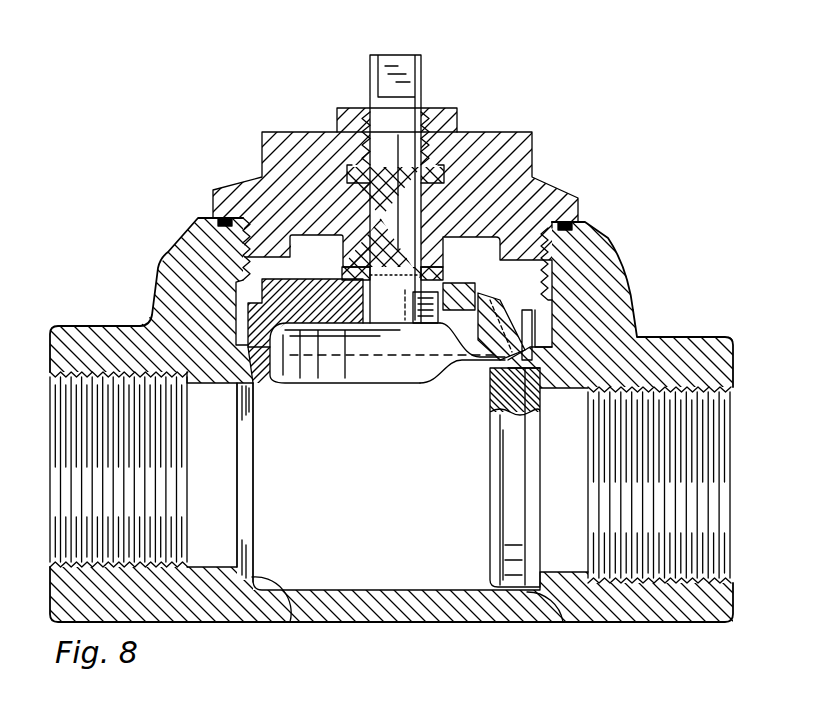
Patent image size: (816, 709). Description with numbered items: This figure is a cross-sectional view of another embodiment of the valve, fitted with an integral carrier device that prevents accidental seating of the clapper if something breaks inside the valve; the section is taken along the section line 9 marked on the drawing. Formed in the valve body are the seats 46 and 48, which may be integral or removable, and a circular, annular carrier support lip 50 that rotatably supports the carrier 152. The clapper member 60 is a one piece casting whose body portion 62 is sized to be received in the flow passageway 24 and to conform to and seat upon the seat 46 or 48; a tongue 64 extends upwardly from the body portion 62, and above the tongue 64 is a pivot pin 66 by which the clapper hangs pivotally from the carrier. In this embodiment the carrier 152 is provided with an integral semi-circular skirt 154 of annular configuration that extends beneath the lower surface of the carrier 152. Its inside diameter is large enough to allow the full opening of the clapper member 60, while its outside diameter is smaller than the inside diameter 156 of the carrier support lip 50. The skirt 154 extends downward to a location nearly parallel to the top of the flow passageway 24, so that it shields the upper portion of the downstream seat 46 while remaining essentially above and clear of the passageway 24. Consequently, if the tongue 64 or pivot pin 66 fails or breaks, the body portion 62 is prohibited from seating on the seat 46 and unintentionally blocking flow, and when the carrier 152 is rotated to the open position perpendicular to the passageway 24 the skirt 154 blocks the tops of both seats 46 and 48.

The section line 9- 9 is at (427, 661).
The passageway 24 is at (715, 506).
The seat 46 is at (290, 622).
The seat 48 is at (563, 622).
The carrier support lip 50 is at (250, 380).
The clapper member 60 is at (490, 503).
The body portion 62 is at (512, 547).
The tongue 64 is at (497, 352).
The pivot pin 66 is at (522, 317).
The carrier 152 is at (252, 318).
The semi-circular skirt 154 is at (378, 372).
The inside diameter 156 is at (258, 365).